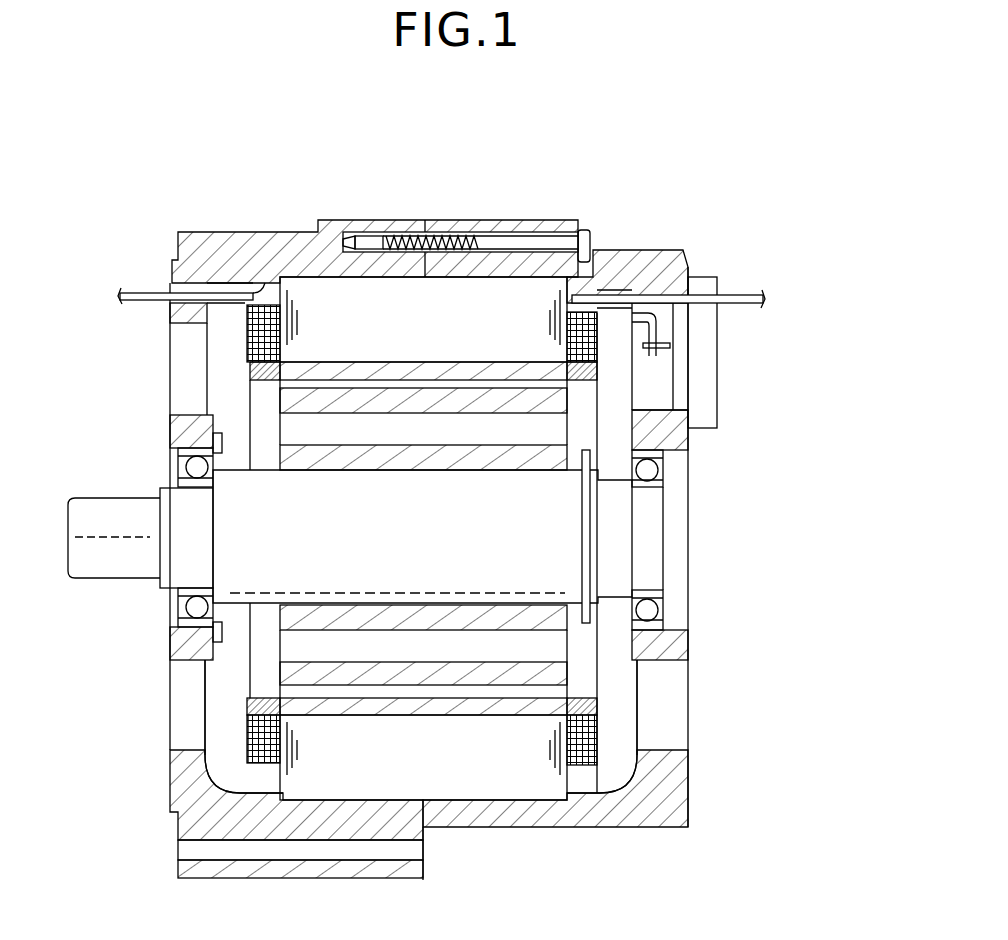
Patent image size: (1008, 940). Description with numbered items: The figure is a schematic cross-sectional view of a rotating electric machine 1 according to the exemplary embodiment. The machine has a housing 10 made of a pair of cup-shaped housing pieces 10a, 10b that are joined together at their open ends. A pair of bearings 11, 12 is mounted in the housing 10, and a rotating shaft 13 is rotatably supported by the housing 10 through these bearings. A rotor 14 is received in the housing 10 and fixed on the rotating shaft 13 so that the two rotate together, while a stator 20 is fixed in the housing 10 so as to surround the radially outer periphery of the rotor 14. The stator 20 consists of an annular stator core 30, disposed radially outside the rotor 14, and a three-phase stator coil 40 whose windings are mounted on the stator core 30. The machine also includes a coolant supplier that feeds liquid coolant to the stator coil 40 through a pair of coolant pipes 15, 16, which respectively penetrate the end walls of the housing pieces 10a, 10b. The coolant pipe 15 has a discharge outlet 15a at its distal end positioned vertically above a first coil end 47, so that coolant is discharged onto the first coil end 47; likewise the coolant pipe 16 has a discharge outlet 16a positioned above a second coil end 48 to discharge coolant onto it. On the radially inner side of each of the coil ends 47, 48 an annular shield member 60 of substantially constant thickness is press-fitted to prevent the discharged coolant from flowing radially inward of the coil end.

The rotating electric machine 1 is at (776, 156).
The housing 10 is at (466, 185).
The housing piece 10a is at (367, 147).
The housing piece 10b is at (381, 230).
The bearing 11 is at (183, 440).
The bearing 12 is at (660, 453).
The rotating shaft 13 is at (113, 557).
The rotor 14 is at (560, 397).
The coolant pipe 15 is at (740, 294).
The discharge outlet 15a is at (593, 290).
The coolant pipe 16 is at (150, 292).
The discharge outlet 16a is at (263, 292).
The stator 20 is at (476, 806).
The stator core 30 is at (532, 790).
The three-phase stator coil 40 is at (602, 735).
The first coil end 47 is at (578, 770).
The second coil end 48 is at (267, 768).
The shield member 60 is at (243, 703).